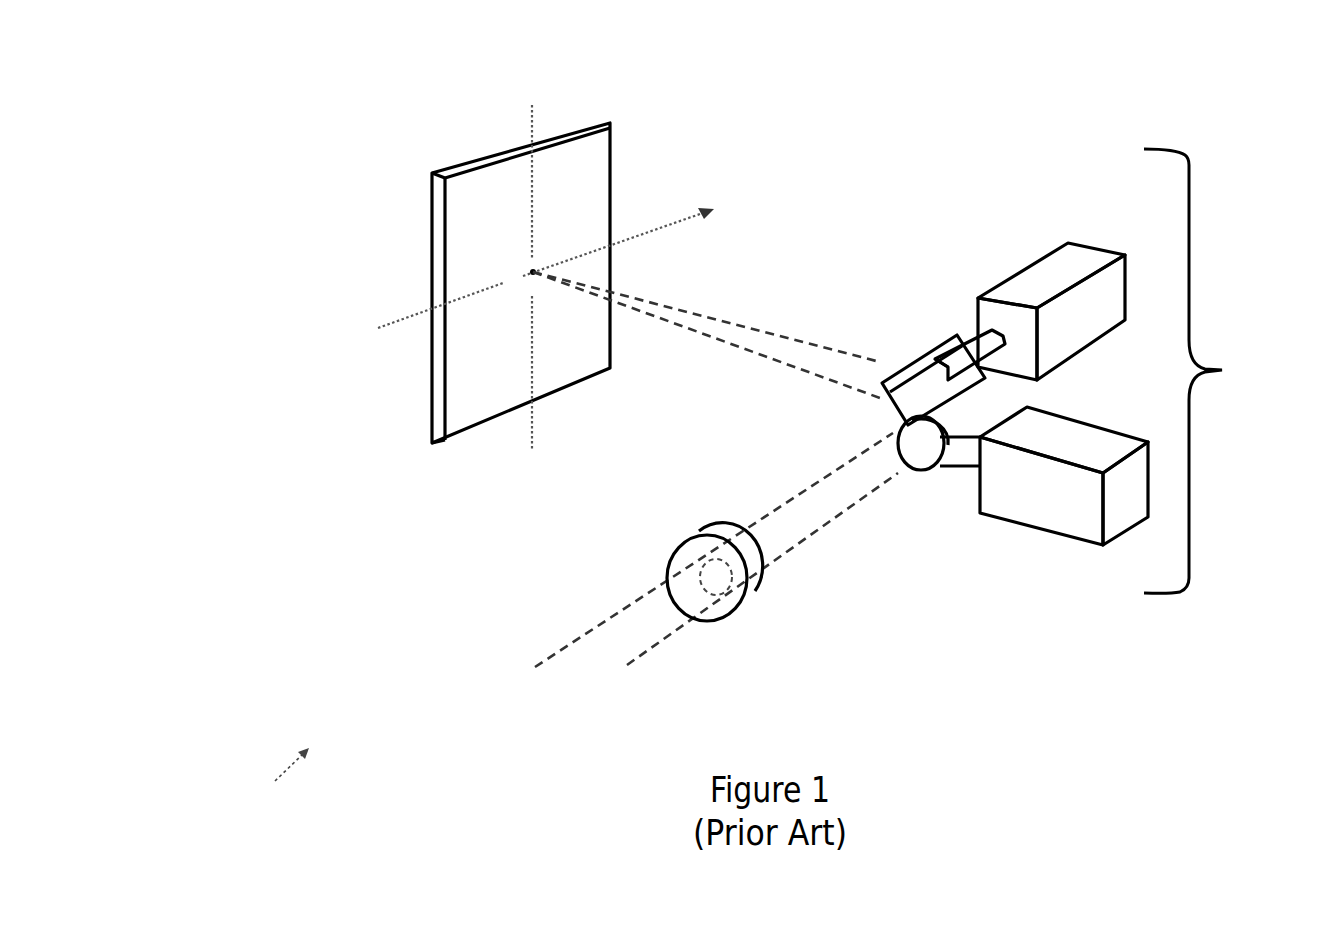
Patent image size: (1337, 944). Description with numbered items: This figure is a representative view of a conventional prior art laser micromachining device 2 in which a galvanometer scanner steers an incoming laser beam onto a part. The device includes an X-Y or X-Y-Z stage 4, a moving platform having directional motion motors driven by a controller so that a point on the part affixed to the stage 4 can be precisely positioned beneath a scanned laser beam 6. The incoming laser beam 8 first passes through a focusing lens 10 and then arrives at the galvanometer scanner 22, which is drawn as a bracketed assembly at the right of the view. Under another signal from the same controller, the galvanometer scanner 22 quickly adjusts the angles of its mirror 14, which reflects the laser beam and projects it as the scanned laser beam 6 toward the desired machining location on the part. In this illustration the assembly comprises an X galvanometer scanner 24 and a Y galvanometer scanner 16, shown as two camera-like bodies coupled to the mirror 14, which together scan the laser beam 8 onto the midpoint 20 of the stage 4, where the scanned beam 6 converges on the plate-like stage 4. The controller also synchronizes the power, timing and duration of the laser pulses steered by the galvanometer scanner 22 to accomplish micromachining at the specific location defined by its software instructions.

The laser micromachining device 2 is at (265, 789).
The stage 4 is at (430, 240).
The scanned laser beam 6 is at (800, 333).
The laser beam 8 is at (572, 622).
The focusing lens 10 is at (677, 530).
The mirror 14 is at (913, 467).
The Y galvanometer scanner 16 is at (1055, 268).
The midpoint 20 is at (533, 272).
The galvanometer scanner 22 is at (1214, 371).
The X galvanometer scanner 24 is at (1057, 540).